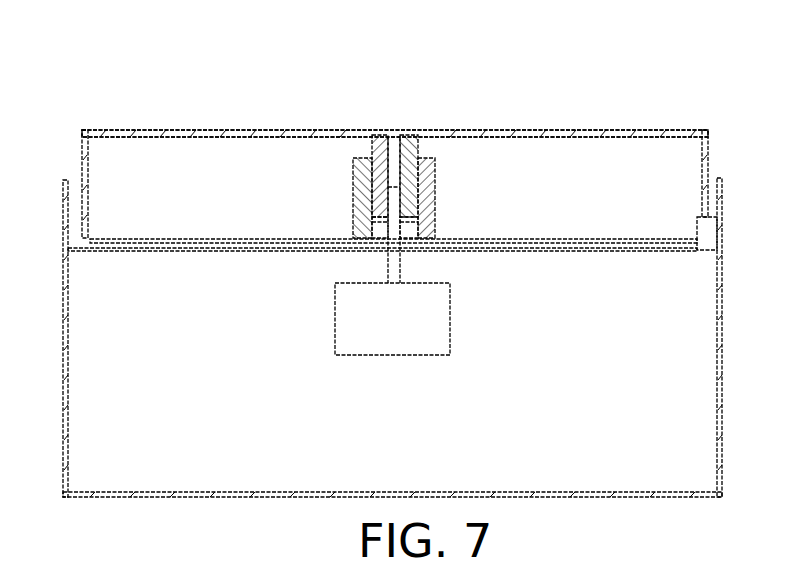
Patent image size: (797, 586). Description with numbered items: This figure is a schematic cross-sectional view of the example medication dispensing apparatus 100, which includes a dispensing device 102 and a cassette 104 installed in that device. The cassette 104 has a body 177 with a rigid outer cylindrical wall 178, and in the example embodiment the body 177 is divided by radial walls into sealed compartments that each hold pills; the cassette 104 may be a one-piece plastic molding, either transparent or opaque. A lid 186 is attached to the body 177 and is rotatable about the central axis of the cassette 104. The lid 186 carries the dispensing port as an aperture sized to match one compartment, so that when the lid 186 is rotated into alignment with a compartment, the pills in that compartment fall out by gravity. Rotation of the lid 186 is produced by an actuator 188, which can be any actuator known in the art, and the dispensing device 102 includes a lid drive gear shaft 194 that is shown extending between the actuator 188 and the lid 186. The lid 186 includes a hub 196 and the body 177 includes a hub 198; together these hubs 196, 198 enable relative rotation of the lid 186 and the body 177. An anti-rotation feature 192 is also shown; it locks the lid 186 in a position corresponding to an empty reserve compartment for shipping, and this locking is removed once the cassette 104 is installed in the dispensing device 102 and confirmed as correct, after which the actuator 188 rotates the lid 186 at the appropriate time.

The apparatus 100 is at (509, 108).
The dispensing device 102 is at (59, 330).
The cassette 104 is at (118, 128).
The body 177 is at (165, 128).
The rigid outer cylindrical wall 178 is at (82, 158).
The lid 186 is at (640, 238).
The actuator 188 is at (392, 357).
The anti-rotation feature 192 is at (708, 233).
The lid drive gear shaft 194 is at (388, 262).
The hub 196 is at (363, 158).
The hub 198 is at (383, 134).